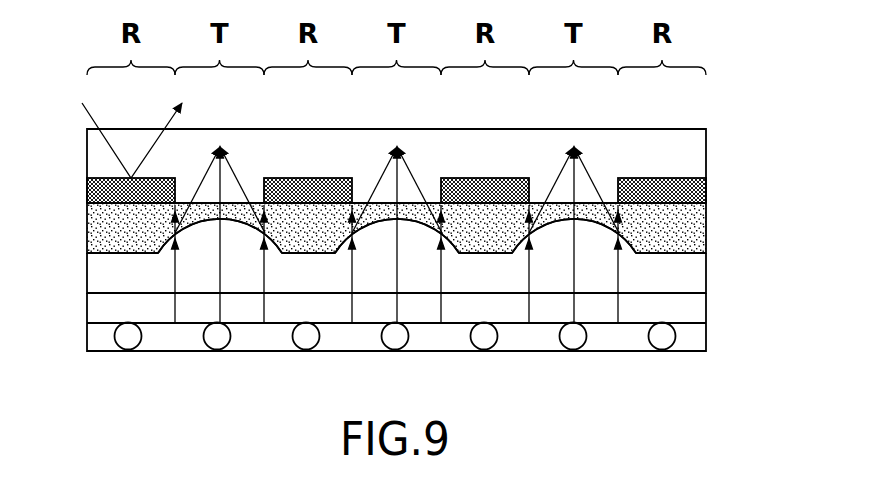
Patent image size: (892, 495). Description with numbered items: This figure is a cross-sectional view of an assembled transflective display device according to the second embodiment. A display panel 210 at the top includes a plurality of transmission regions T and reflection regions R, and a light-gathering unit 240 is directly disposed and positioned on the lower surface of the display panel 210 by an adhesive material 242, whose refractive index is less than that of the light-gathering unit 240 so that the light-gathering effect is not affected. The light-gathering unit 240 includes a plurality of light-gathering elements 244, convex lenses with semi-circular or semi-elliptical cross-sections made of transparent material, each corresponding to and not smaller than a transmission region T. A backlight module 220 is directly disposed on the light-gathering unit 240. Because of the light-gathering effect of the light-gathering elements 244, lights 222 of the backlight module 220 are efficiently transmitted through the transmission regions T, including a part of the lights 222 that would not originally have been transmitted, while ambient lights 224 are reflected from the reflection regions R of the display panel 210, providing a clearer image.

The display panel 210 is at (706, 129).
The backlight module 220 is at (706, 293).
The lights 222 is at (218, 262).
The ambient lights 224 is at (88, 116).
The light-gathering unit 240 is at (680, 273).
The adhesive material 242 is at (685, 230).
The light-gathering elements 244 is at (205, 244).